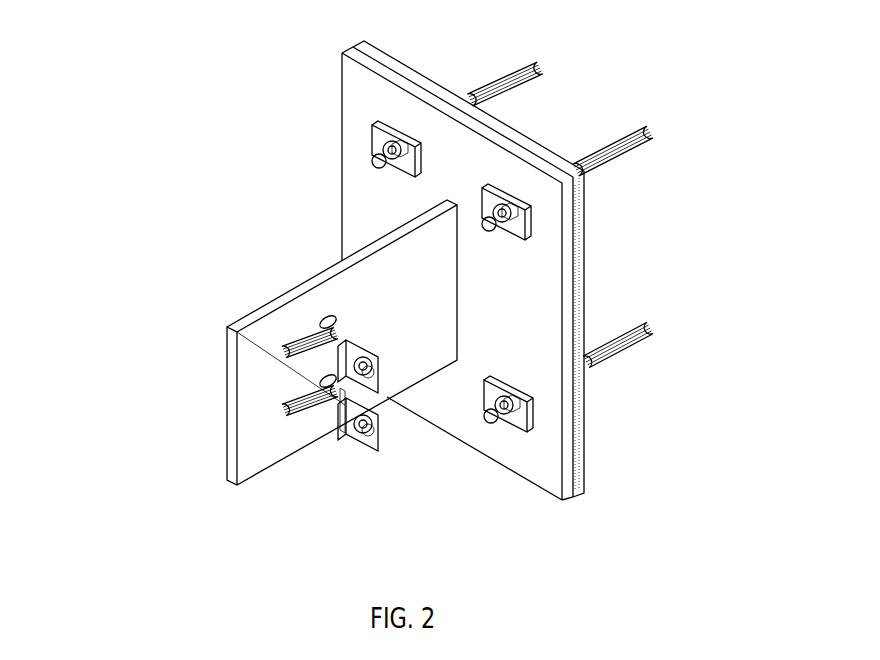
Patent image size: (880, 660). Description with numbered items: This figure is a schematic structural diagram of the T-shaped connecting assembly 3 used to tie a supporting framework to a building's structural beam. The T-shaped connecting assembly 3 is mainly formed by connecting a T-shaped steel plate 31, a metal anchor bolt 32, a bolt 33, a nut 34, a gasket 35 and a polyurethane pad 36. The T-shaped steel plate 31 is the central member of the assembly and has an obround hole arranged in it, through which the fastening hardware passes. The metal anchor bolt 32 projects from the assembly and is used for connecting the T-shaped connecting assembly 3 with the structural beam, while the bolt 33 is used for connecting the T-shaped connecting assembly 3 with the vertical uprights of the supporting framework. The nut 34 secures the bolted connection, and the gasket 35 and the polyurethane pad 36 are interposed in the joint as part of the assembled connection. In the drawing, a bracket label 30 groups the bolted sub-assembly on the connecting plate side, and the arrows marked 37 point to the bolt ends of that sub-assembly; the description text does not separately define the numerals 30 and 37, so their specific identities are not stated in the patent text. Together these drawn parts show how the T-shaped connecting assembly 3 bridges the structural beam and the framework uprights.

The T-shaped connecting assembly 3 is at (463, 256).
The bracket assembly 30 is at (267, 382).
The T-shaped steel plate 31 is at (535, 290).
The metal anchor bolt 32 is at (627, 352).
The bolt 33 is at (227, 330).
The nut 34 is at (365, 443).
The gasket 35 is at (338, 440).
The polyurethane pad 36 is at (533, 130).
The bolt 37 is at (292, 340).